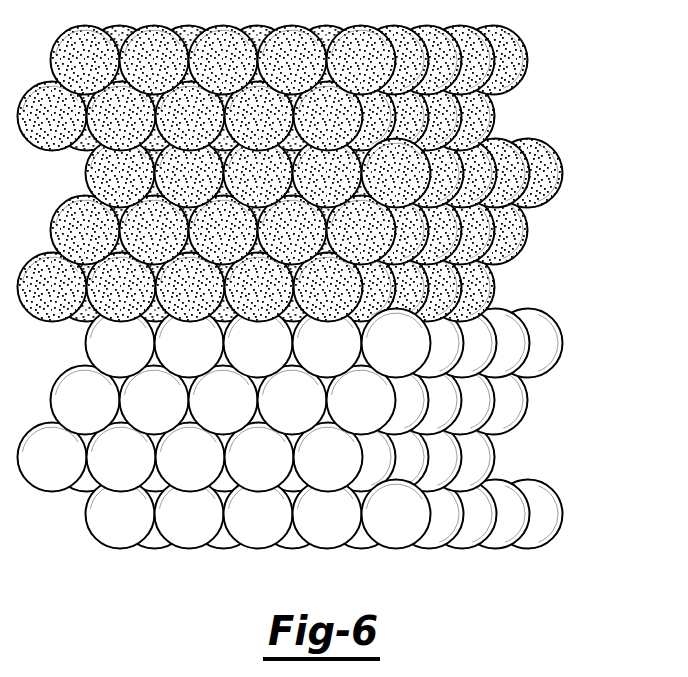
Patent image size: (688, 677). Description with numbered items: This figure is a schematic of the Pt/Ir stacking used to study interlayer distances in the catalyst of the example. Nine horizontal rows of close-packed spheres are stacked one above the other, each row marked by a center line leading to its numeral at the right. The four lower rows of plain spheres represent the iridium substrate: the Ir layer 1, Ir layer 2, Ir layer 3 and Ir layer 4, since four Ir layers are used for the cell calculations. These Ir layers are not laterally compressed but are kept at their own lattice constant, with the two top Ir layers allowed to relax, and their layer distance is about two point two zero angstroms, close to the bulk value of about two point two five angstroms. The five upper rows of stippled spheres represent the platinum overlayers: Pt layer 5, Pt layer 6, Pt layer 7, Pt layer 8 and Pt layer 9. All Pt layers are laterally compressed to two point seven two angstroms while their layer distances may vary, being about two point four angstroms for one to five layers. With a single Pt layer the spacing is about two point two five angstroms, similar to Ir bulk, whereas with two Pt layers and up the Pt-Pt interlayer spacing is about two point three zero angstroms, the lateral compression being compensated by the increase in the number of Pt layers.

The Ir layer 1 is at (120, 514).
The Ir layer 2 is at (52, 457).
The Ir layer 3 is at (85, 400).
The Ir layer 4 is at (120, 343).
The Pt layer 5 is at (52, 287).
The Pt layer 6 is at (85, 230).
The Pt layer 7 is at (120, 173).
The Pt layer 8 is at (52, 116).
The Pt layer 9 is at (85, 60).